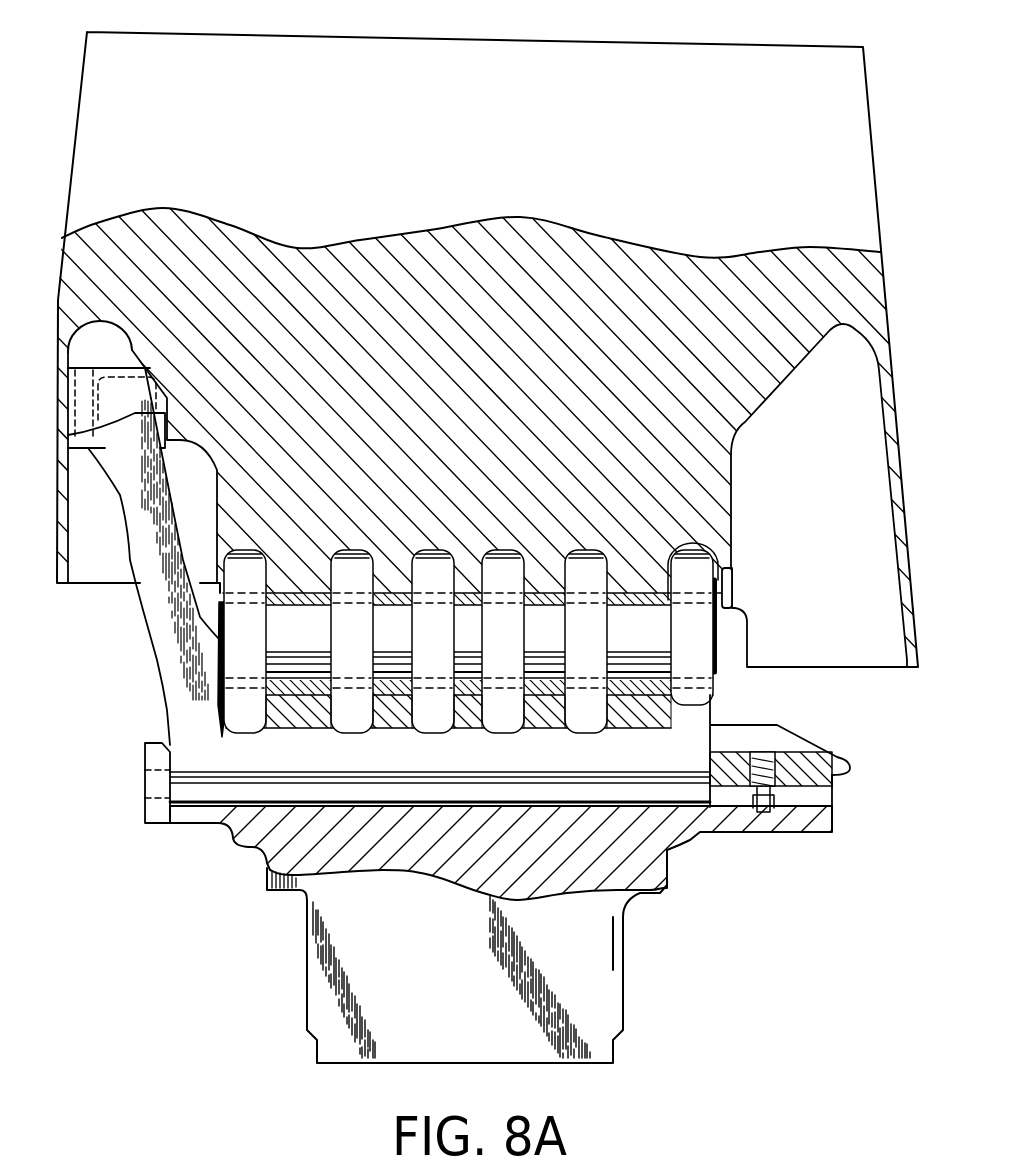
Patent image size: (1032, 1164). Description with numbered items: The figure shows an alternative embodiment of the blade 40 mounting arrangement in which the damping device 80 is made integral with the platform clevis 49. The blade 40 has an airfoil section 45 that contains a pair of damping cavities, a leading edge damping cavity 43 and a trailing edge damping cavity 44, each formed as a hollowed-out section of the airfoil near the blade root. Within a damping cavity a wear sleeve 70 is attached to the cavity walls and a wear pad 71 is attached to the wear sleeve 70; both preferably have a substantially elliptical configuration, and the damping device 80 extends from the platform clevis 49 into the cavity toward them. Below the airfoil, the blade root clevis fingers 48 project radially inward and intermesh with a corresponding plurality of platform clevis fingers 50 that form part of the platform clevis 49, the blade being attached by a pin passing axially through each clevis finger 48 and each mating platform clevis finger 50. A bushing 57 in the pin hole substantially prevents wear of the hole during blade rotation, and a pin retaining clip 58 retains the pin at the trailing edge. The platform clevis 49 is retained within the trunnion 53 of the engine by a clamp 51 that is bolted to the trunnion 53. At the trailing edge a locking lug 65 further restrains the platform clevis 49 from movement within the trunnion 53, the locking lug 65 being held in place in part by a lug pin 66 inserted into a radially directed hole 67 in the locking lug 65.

The blade 40 is at (462, 102).
The airfoil section 45 is at (673, 280).
The leading edge damping cavity 43 is at (87, 549).
The trailing edge damping cavity 44 is at (807, 586).
The wear sleeve 70 is at (78, 362).
The wear pad 71 is at (88, 446).
The damping device 80 is at (162, 602).
The platform clevis fingers 50 is at (230, 639).
The clevis fingers 48 is at (607, 750).
The pin retaining clip 58 is at (725, 610).
The bushing 57 is at (667, 705).
The platform clevis 49 is at (237, 745).
The clamp 51 is at (150, 757).
The trunnion 53 is at (272, 855).
The locking lug 65 is at (833, 783).
The lug pin 66 is at (766, 816).
The radially directed hole 67 is at (759, 818).